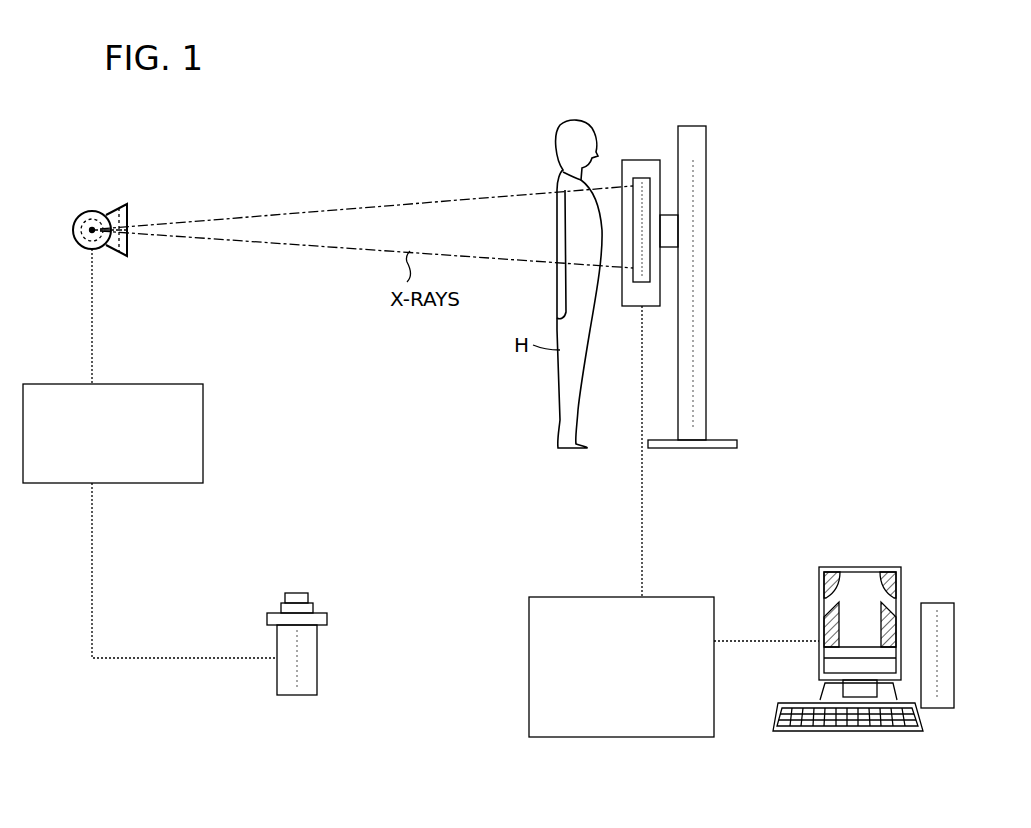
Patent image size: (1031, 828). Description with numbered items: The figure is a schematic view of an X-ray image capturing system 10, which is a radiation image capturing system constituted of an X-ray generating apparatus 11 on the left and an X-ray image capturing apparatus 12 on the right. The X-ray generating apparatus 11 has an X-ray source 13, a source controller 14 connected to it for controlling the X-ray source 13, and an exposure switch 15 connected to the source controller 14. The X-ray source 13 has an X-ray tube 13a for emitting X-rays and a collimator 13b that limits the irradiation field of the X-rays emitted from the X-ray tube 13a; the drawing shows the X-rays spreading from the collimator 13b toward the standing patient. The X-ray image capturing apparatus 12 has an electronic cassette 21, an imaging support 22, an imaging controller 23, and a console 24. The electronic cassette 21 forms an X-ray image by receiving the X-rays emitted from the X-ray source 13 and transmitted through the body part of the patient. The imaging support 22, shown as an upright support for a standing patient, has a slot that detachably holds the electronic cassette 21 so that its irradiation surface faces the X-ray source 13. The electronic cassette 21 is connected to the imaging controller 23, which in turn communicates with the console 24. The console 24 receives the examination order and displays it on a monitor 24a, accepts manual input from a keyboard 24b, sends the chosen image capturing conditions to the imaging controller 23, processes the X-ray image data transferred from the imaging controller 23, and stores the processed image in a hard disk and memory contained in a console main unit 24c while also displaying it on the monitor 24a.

The X-ray image capturing system 10 is at (296, 118).
The X-ray generating apparatus 11 is at (41, 125).
The X-ray image capturing apparatus 12 is at (800, 118).
The X-ray source 13 is at (76, 195).
The X-ray tube 13a is at (72, 231).
The collimator 13b is at (132, 206).
The source controller 14 is at (60, 383).
The exposure switch 15 is at (275, 682).
The electronic cassette 21 is at (643, 178).
The imaging support 22 is at (707, 190).
The imaging controller 23 is at (683, 597).
The console 24 is at (912, 540).
The monitor 24a is at (851, 578).
The keyboard 24b is at (824, 722).
The console main unit 24c is at (955, 672).